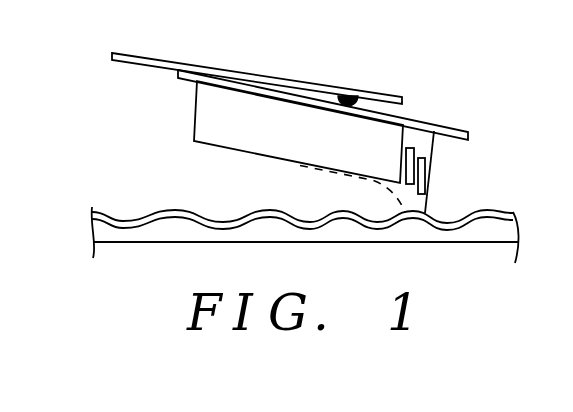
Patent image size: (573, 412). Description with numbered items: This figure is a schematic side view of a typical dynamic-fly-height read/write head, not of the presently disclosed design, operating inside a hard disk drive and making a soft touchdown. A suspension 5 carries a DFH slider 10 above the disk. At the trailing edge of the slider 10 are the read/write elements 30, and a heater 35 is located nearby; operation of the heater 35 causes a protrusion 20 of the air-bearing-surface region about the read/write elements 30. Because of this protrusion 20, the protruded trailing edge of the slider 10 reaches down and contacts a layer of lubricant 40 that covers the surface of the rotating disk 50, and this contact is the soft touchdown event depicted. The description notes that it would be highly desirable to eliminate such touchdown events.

The suspension 5 is at (153, 61).
The DFH slider 10 is at (215, 115).
The protrusion 20 is at (430, 204).
The read/write elements 30 is at (422, 158).
The heater 35 is at (411, 148).
The lubricant 40 is at (142, 221).
The rotating disk 50 is at (205, 240).